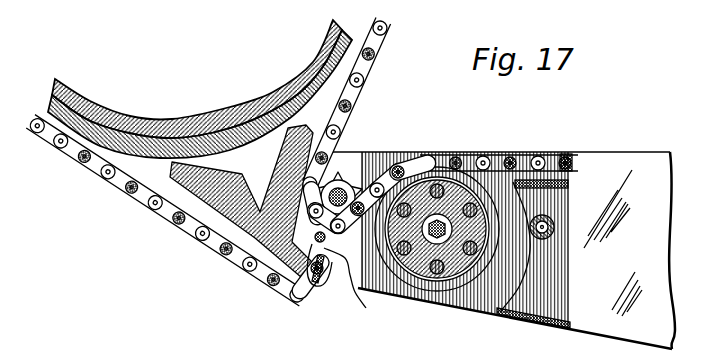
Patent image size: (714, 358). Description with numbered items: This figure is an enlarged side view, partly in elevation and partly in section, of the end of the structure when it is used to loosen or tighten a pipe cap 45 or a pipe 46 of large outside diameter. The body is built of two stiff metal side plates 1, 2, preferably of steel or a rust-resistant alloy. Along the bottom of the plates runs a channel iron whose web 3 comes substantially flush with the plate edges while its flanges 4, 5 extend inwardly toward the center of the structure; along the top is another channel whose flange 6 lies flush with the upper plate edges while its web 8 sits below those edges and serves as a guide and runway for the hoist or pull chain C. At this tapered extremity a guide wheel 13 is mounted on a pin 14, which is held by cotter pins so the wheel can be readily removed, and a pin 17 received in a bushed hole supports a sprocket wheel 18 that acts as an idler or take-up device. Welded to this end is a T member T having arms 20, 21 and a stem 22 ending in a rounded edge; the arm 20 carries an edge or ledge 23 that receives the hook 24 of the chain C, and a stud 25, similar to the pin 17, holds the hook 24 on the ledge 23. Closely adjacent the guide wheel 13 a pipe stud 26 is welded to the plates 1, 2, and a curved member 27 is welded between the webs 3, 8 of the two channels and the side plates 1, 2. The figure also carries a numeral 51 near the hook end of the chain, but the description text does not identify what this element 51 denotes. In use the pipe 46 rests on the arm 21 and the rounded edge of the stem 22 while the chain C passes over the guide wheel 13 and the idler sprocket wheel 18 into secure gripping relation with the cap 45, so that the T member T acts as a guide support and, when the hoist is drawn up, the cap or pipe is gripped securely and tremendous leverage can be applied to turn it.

The side plate 1 is at (557, 198).
The side plate 2 is at (632, 160).
The web 3 is at (557, 326).
The flange 4 is at (542, 306).
The flange 5 is at (266, 173).
The flange 6 is at (549, 158).
The web 8 is at (563, 180).
The guide wheel 13 is at (500, 155).
The pin 14 is at (433, 185).
The pin 17 is at (349, 164).
The sprocket wheel 18 is at (379, 170).
The arm 20 is at (256, 271).
The arm 21 is at (190, 184).
The stem 22 is at (223, 204).
The ledge 23 is at (332, 270).
The hook 24 is at (366, 308).
The stud 25 is at (317, 233).
The pipe stud 26 is at (558, 207).
The curved member 27 is at (500, 279).
The pipe cap 45 is at (313, 66).
The pipe 46 is at (273, 93).
The hook finger 51 is at (313, 286).
The chain C is at (360, 100).
The T member T is at (213, 233).